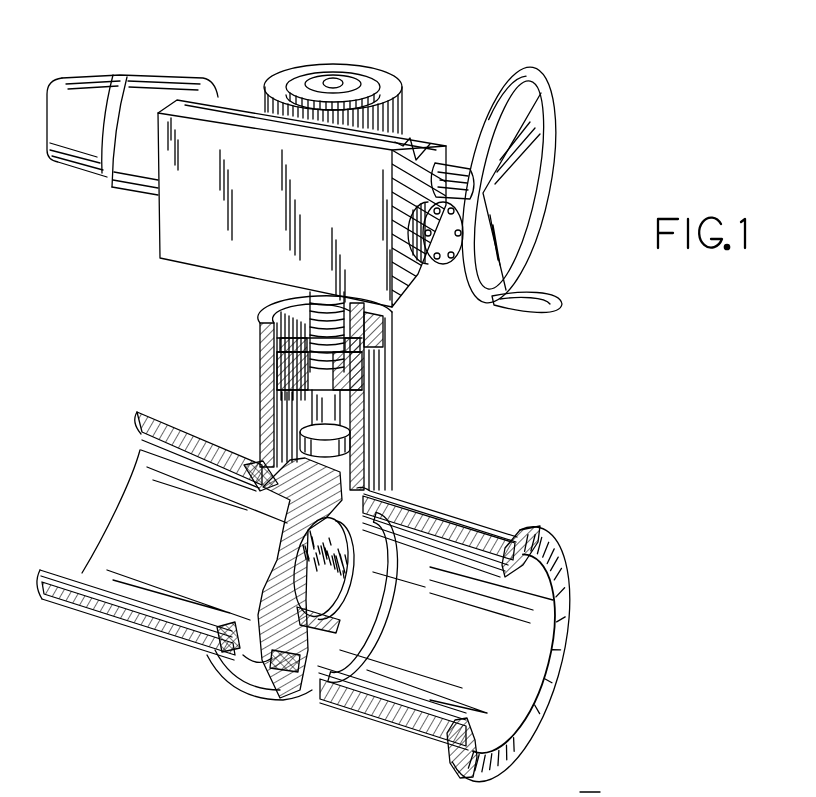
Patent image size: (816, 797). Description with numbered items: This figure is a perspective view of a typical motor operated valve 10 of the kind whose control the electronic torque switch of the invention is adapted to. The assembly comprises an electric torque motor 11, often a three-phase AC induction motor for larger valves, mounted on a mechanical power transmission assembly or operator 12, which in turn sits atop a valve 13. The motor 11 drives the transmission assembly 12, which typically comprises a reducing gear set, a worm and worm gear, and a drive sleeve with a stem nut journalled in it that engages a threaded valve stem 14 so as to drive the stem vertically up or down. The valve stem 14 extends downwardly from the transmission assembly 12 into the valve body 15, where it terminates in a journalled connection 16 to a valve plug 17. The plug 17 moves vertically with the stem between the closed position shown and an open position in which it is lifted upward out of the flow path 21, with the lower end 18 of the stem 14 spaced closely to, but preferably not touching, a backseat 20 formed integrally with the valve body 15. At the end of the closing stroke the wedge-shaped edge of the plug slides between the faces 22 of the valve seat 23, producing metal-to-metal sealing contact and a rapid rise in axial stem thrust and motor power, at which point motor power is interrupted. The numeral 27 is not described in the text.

The motor operated valve 10 is at (417, 105).
The electric torque motor 11 is at (100, 80).
The mechanical power transmission assembly or operator 12 is at (428, 286).
The valve 13 is at (414, 579).
The threaded valve stem 14 is at (363, 330).
The valve body 15 is at (413, 497).
The journalled connection 16 is at (330, 450).
The valve plug 17 is at (367, 620).
The lower end of the stem 18 is at (350, 420).
The backseat 20 is at (277, 390).
The flow path 21 is at (495, 657).
The faces of the valve seat 22 is at (289, 497).
The valve seat 23 is at (260, 477).
The pipe end 27 is at (599, 787).